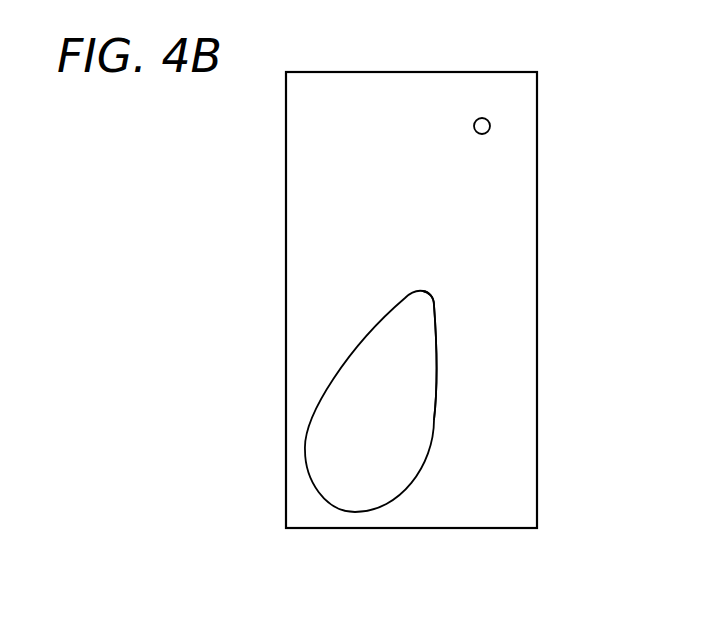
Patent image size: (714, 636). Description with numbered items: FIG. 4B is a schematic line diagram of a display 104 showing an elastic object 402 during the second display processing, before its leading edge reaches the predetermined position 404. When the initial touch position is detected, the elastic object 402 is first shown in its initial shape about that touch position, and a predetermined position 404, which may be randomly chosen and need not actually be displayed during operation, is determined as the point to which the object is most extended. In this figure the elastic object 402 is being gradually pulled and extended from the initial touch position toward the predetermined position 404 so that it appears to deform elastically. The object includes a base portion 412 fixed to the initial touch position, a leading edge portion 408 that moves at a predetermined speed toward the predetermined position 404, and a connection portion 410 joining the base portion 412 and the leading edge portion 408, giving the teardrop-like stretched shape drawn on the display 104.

The display 104 is at (312, 72).
The predetermined position 404 is at (482, 118).
The elastic object 402 is at (337, 510).
The leading edge portion 408 is at (430, 312).
The connection portion 410 is at (395, 397).
The base portion 412 is at (350, 476).